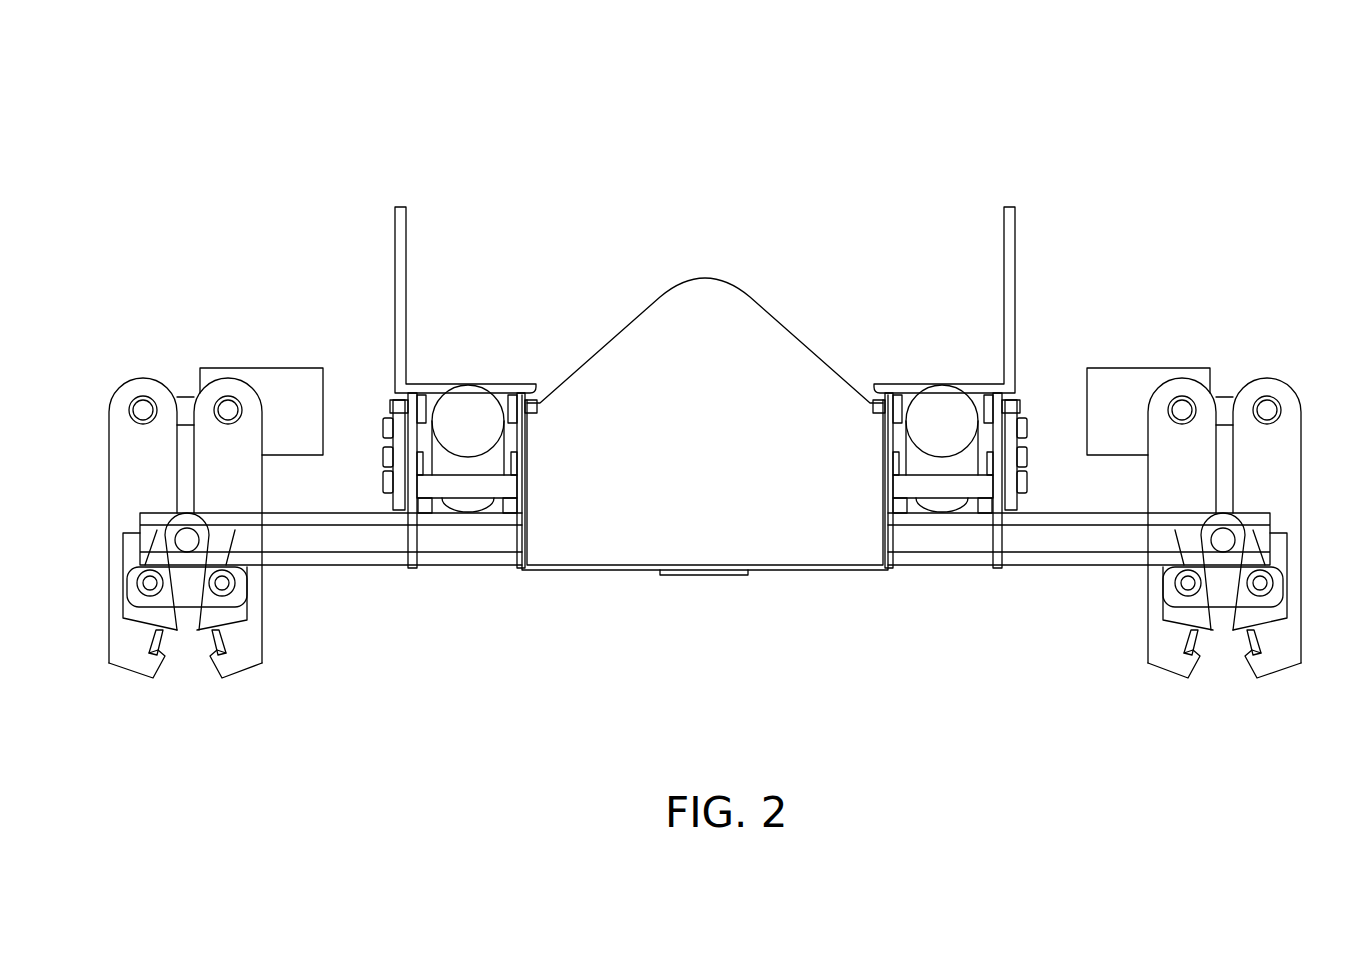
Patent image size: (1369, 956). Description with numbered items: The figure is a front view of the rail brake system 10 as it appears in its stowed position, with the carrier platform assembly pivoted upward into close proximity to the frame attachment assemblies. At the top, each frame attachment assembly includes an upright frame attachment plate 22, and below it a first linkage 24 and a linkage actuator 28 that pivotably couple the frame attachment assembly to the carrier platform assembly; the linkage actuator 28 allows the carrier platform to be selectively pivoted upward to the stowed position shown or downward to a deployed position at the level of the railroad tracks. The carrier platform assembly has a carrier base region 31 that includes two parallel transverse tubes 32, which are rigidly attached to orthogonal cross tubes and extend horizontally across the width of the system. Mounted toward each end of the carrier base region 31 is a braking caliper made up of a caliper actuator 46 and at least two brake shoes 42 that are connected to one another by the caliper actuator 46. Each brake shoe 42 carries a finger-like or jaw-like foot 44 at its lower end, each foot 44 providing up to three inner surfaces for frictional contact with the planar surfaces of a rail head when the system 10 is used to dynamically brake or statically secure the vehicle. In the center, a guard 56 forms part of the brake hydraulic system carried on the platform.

The rail brake system 10 is at (1110, 90).
The frame attachment plate 22 is at (405, 260).
The first linkage 24 is at (1005, 433).
The linkage actuator 28 is at (472, 412).
The carrier base region 31 is at (1055, 590).
The transverse tube 32 is at (348, 542).
The brake shoe 42 is at (210, 467).
The foot 44 is at (125, 667).
The caliper actuator 46 is at (292, 407).
The guard 56 is at (642, 472).